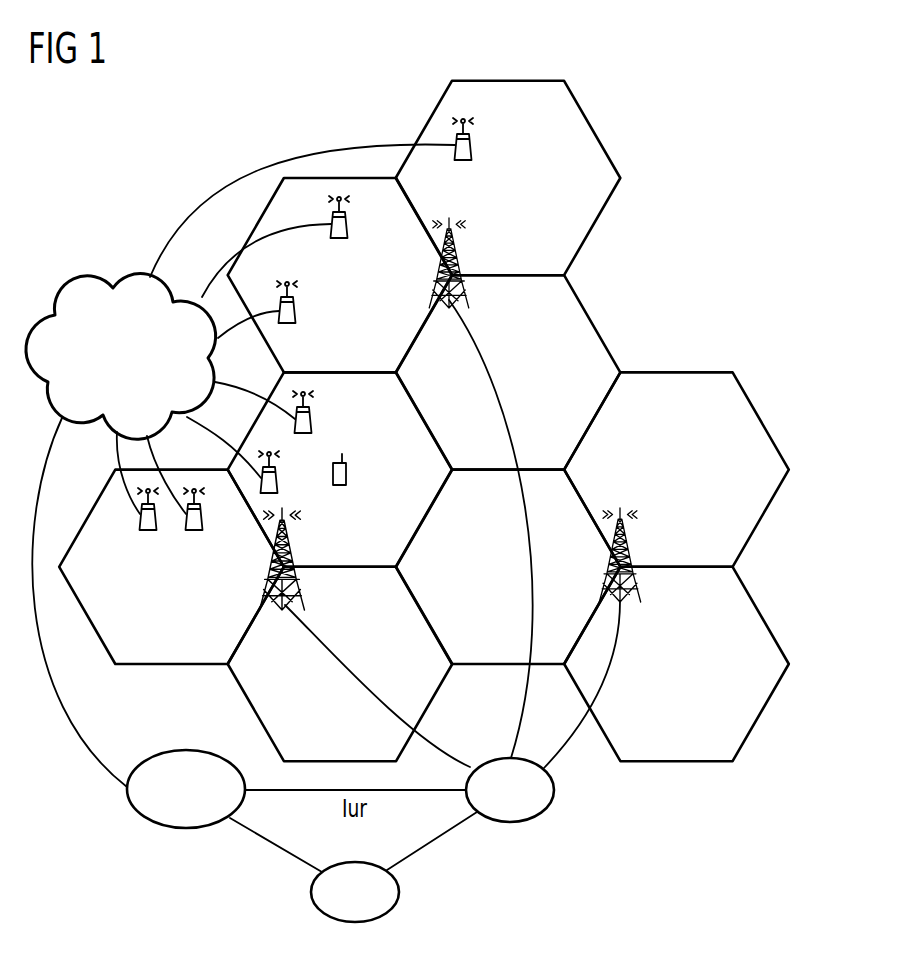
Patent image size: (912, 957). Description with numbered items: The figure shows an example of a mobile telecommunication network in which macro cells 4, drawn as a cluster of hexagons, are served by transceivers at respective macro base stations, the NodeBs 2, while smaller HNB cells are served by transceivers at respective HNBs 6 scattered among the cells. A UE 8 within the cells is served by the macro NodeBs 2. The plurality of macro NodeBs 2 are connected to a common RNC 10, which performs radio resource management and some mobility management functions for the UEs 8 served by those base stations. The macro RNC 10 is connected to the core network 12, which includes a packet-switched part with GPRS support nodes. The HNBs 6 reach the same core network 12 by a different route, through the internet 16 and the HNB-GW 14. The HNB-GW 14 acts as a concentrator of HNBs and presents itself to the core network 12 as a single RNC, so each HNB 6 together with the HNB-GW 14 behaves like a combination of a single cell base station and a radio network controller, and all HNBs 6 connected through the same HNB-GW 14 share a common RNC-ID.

The NodeB 2 is at (458, 262).
The macro cell 4 is at (509, 82).
The HNB 6 is at (296, 310).
The UE 8 is at (348, 475).
The RNC 10 is at (554, 790).
The core network 12 is at (399, 892).
The HNB-GW 14 is at (185, 829).
The internet 16 is at (92, 280).